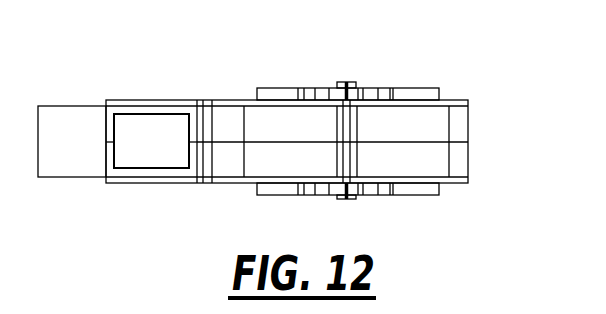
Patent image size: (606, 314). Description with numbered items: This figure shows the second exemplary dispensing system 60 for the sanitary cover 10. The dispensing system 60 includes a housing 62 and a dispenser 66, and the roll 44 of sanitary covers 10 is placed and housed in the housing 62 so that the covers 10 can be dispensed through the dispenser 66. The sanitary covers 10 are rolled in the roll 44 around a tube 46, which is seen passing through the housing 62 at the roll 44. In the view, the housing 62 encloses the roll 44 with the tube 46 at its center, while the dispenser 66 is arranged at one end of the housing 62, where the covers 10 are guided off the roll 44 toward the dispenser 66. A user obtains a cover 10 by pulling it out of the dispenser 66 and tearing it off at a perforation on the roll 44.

The sanitary cover 10 is at (62, 103).
The roll 44 is at (408, 120).
The tube 46 is at (345, 78).
The second exemplary dispensing system 60 is at (518, 69).
The housing 62 is at (465, 130).
The dispenser 66 is at (133, 98).